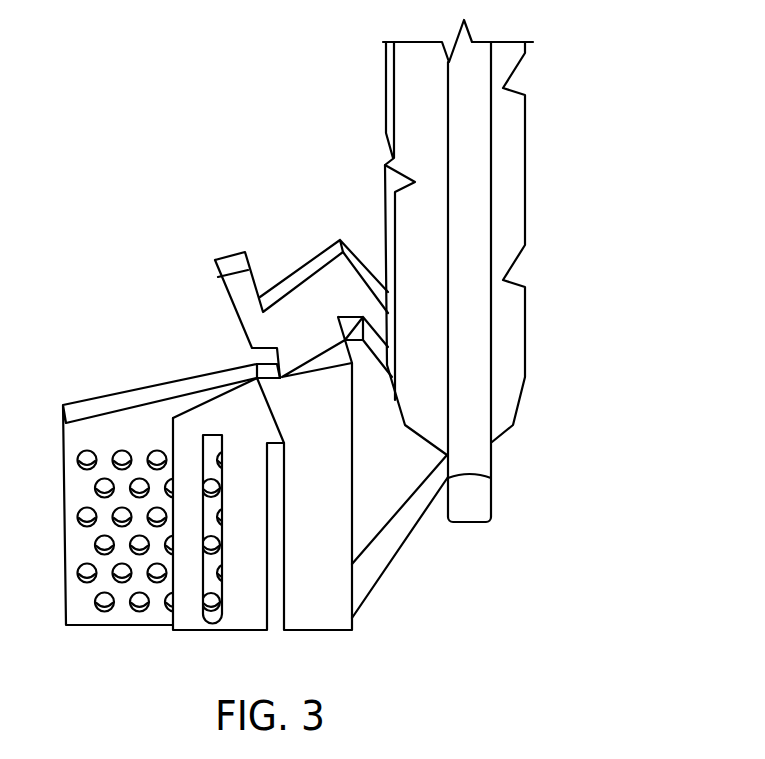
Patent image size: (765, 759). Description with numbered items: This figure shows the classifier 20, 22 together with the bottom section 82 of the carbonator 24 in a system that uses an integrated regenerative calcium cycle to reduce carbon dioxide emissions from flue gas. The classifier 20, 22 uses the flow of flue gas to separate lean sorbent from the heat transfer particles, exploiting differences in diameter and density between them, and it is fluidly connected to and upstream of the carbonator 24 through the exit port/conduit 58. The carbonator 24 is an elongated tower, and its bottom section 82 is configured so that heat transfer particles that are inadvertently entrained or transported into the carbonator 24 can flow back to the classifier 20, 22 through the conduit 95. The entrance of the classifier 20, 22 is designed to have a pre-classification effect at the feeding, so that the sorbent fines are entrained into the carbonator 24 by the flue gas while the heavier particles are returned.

The classifier 20 is at (172, 383).
The classifier 22 is at (157, 529).
The carbonator 24 is at (386, 72).
The exit port/conduit 58 is at (308, 303).
The bottom section 82 is at (577, 215).
The conduit 95 is at (393, 562).